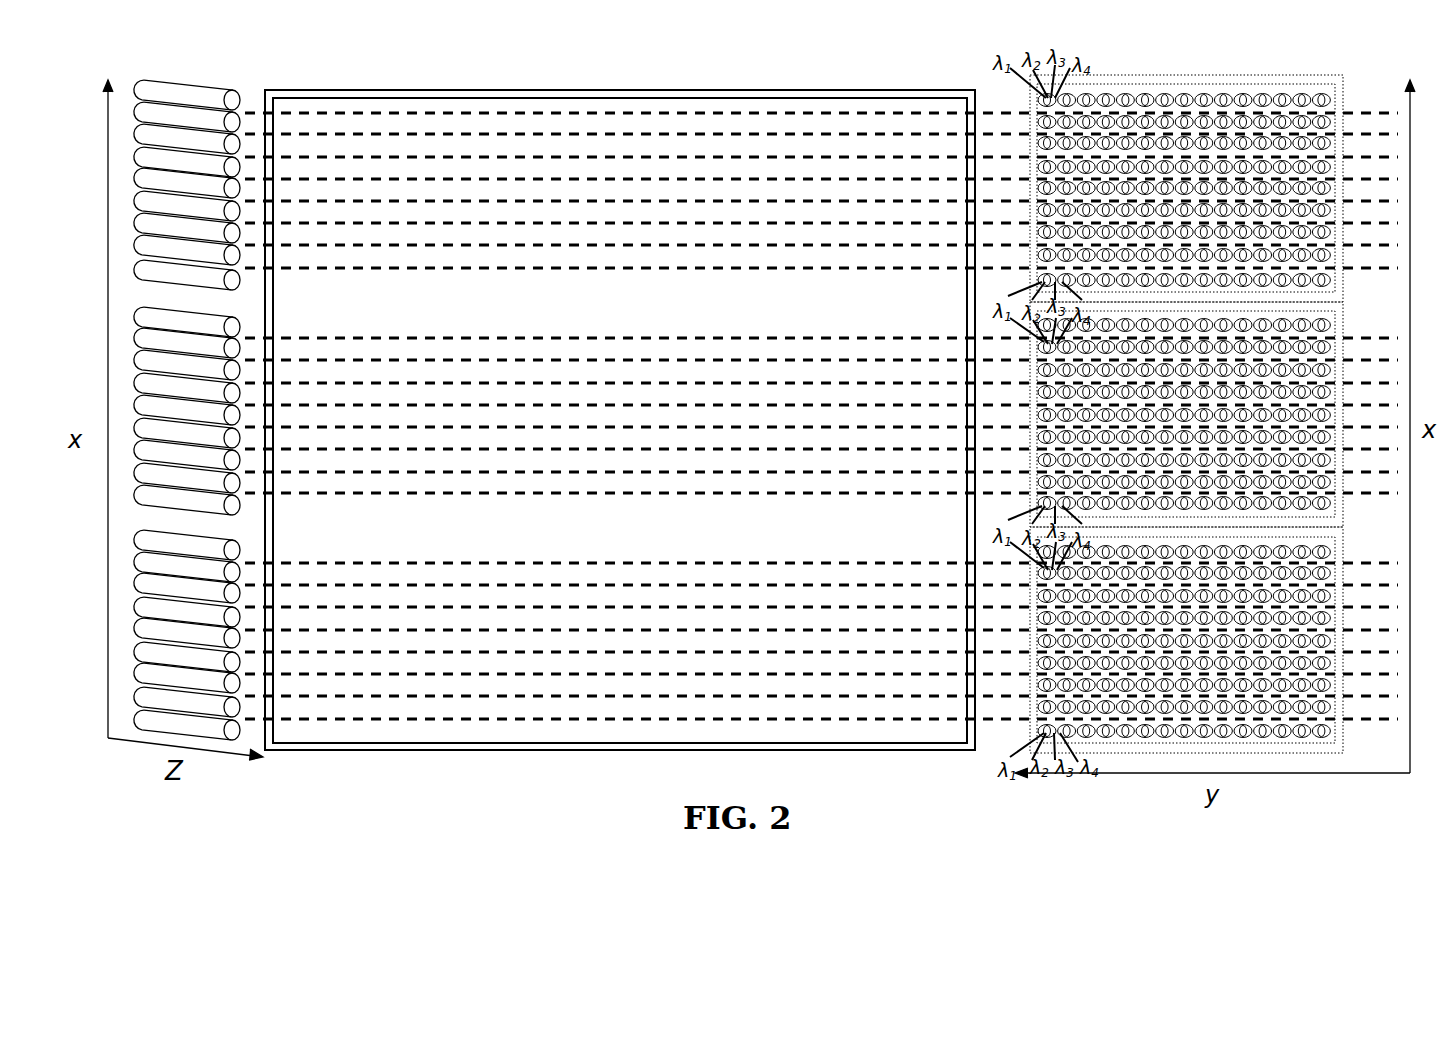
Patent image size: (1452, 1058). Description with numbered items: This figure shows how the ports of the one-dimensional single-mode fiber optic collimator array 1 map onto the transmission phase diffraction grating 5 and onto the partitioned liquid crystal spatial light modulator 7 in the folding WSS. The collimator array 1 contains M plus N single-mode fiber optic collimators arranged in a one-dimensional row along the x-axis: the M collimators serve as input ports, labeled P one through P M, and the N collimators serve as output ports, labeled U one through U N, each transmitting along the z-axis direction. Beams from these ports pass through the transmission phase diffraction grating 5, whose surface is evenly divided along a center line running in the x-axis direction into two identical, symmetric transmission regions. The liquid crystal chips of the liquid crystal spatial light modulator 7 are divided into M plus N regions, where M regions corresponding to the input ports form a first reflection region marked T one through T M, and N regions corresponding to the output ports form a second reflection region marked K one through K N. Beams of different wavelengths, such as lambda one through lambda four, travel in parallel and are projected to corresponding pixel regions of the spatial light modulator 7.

The one-dimensional single-mode fiber optic collimator array 1 is at (156, 94).
The transmission phase diffraction grating 5 is at (557, 101).
The liquid crystal spatial light modulator 7 is at (1335, 83).